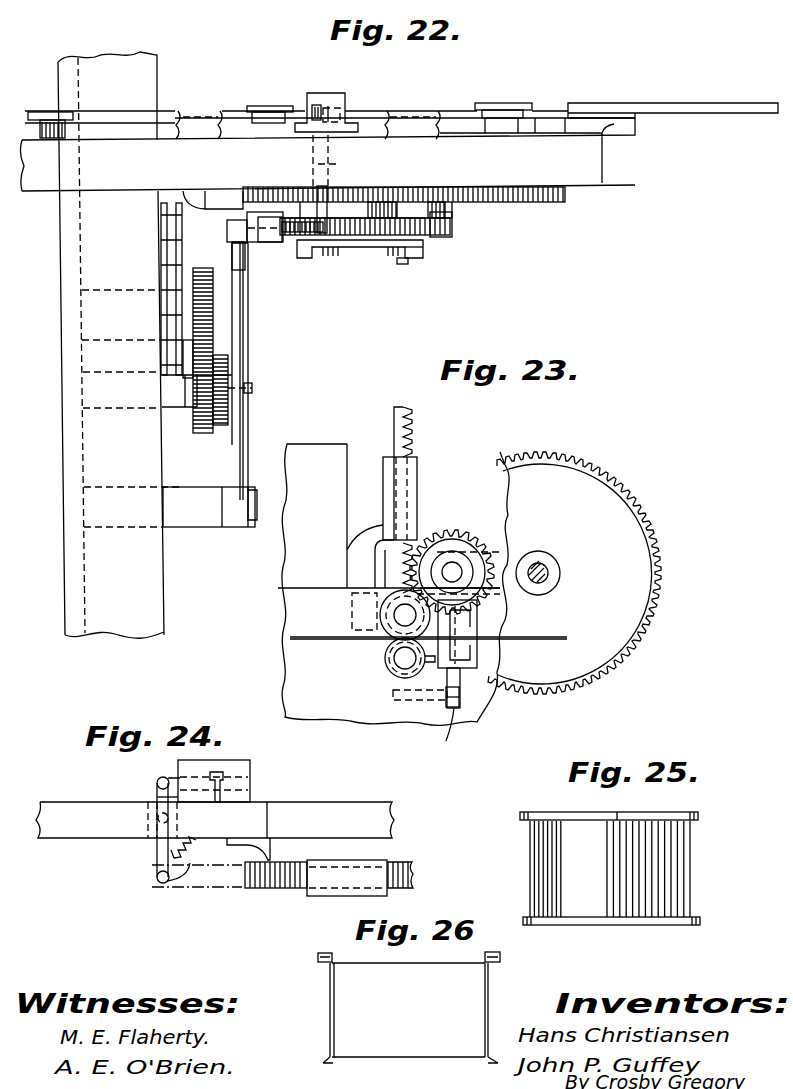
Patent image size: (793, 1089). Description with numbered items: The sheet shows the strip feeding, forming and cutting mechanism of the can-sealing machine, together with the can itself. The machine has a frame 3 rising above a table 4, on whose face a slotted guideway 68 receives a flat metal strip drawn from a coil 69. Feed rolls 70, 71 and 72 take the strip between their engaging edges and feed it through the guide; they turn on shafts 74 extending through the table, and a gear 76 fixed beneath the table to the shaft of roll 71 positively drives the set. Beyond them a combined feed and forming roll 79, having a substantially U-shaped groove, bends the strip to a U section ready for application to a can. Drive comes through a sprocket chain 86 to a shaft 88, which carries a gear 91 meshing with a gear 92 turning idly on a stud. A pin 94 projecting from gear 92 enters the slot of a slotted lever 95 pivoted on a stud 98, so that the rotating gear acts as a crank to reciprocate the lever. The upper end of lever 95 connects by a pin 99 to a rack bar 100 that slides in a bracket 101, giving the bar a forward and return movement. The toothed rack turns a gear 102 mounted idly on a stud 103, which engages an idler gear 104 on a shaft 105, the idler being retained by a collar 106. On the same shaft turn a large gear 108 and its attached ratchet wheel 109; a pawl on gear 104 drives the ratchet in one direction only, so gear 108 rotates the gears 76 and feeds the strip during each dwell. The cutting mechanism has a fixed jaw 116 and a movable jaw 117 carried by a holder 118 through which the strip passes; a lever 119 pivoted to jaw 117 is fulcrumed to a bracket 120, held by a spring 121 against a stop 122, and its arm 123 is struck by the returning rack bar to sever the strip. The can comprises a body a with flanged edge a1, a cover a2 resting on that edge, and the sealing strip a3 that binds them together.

In FIG. 22, the frame 3 is at (65, 225).
In FIG. 22, the table 4 is at (132, 157).
In FIG. 23, the table 4 is at (320, 462).
In FIG. 24, the table 4 is at (337, 812).
In FIG. 22, the guideway 68 is at (197, 117).
In FIG. 22, the coil 69 is at (703, 104).
In FIG. 22, the feed roll 70 is at (262, 106).
In FIG. 23, the feed roll 70 is at (386, 655).
In FIG. 23, the feed roll 71 is at (385, 595).
In FIG. 22, the feed roll 72 is at (520, 103).
In FIG. 23, the shaft 74 is at (398, 614).
In FIG. 22, the gear 76 is at (262, 187).
In FIG. 22, the combined feed and forming roll 79 is at (46, 110).
In FIG. 22, the sprocket chain 86 is at (160, 237).
In FIG. 22, the shaft 88 is at (215, 308).
In FIG. 22, the gear 91 is at (205, 322).
In FIG. 22, the gear 92 is at (205, 393).
In FIG. 22, the pin 94 is at (252, 388).
In FIG. 22, the slotted lever 95 is at (242, 447).
In FIG. 22, the stud 98 is at (256, 520).
In FIG. 22, the pin 99 is at (228, 233).
In FIG. 22, the rack bar 100 is at (268, 243).
In FIG. 23, the rack bar 100 is at (410, 428).
In FIG. 24, the rack bar 100 is at (403, 863).
In FIG. 22, the bracket 101 is at (190, 190).
In FIG. 23, the bracket 101 is at (420, 478).
In FIG. 24, the bracket 101 is at (308, 895).
In FIG. 22, the gear 102 is at (350, 240).
In FIG. 23, the gear 102 is at (440, 528).
In FIG. 23, the stud 103 is at (454, 564).
In FIG. 22, the idler gear 104 is at (440, 237).
In FIG. 23, the idler gear 104 is at (500, 580).
In FIG. 22, the shaft 105 is at (403, 264).
In FIG. 23, the shaft 105 is at (549, 577).
In FIG. 22, the collar 106 is at (425, 257).
In FIG. 22, the gear 108 is at (490, 205).
In FIG. 23, the gear 108 is at (638, 508).
In FIG. 22, the ratchet wheel 109 is at (392, 212).
In FIG. 22, the fixed jaw 116 is at (350, 103).
In FIG. 23, the fixed jaw 116 is at (500, 627).
In FIG. 24, the fixed jaw 116 is at (230, 781).
In FIG. 22, the movable jaw 117 is at (328, 106).
In FIG. 23, the movable jaw 117 is at (480, 657).
In FIG. 24, the movable jaw 117 is at (162, 777).
In FIG. 22, the holder 118 is at (322, 93).
In FIG. 23, the holder 118 is at (470, 665).
In FIG. 24, the holder 118 is at (238, 763).
In FIG. 22, the lever 119 is at (333, 163).
In FIG. 23, the lever 119 is at (456, 736).
In FIG. 24, the lever 119 is at (157, 798).
In FIG. 22, the bracket 120 is at (338, 168).
In FIG. 24, the bracket 120 is at (157, 823).
In FIG. 24, the spring 121 is at (155, 878).
In FIG. 24, the stop 122 is at (182, 842).
In FIG. 22, the arm 123 is at (303, 252).
In FIG. 23, the arm 123 is at (407, 703).
In FIG. 24, the arm 123 is at (160, 877).
In FIG. 25, the body of the can a is at (682, 870).
In FIG. 26, the body of the can a is at (490, 1007).
In FIG. 26, the flanged edge a1 is at (497, 965).
In FIG. 26, the cover a2 is at (407, 961).
In FIG. 25, the sealing strip a3 is at (700, 812).
In FIG. 26, the sealing strip a3 is at (502, 953).